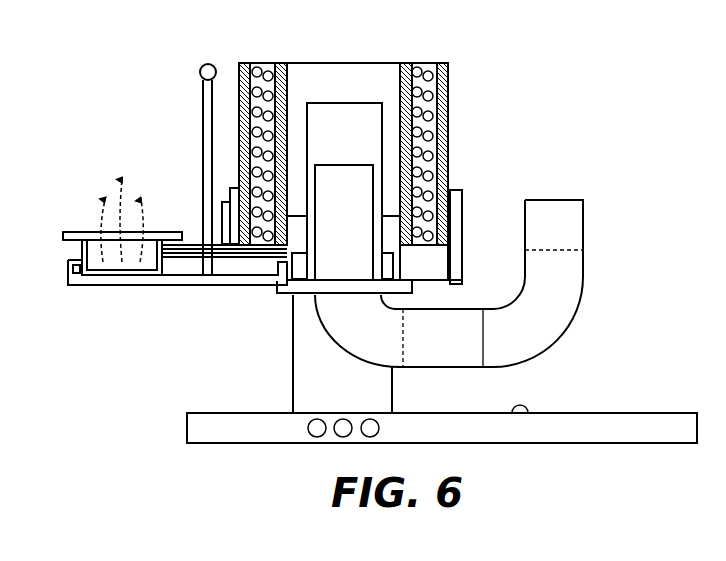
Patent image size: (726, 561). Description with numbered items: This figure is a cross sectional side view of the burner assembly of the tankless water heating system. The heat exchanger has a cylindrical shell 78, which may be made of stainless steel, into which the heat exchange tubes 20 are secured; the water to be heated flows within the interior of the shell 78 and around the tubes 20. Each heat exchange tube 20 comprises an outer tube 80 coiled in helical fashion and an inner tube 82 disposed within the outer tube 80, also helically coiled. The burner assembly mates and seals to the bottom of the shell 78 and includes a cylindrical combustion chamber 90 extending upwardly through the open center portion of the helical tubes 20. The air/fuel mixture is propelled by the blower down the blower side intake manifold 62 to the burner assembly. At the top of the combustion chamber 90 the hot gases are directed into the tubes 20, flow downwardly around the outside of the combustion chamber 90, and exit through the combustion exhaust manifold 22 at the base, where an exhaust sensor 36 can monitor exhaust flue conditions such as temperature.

The heat exchange tubes 20 is at (263, 46).
The combustion exhaust manifold 22 is at (78, 231).
The exhaust sensor 36 is at (202, 113).
The blower side intake manifold 62 is at (586, 268).
The cylindrical shell 78 is at (451, 94).
The outer tube 80 is at (257, 66).
The inner tube 82 is at (272, 62).
The cylindrical combustion chamber 90 is at (352, 101).